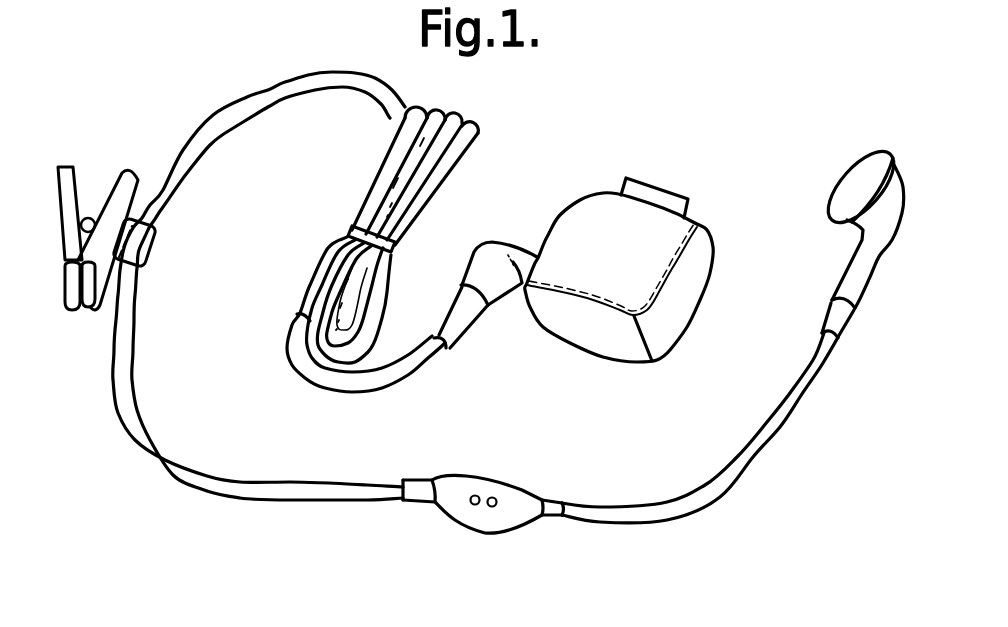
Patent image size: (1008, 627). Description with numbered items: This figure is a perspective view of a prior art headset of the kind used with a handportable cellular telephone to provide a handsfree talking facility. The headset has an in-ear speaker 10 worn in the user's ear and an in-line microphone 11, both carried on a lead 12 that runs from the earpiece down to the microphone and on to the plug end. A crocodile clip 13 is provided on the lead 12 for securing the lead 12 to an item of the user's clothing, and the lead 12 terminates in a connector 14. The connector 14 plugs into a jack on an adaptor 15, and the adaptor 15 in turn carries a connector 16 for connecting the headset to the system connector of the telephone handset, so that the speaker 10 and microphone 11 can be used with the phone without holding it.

The in-ear speaker 10 is at (868, 163).
The in-line microphone 11 is at (530, 524).
The lead 12 is at (219, 493).
The crocodile clip 13 is at (75, 183).
The connector 14 is at (505, 242).
The adaptor 15 is at (594, 358).
The connector 16 is at (670, 190).